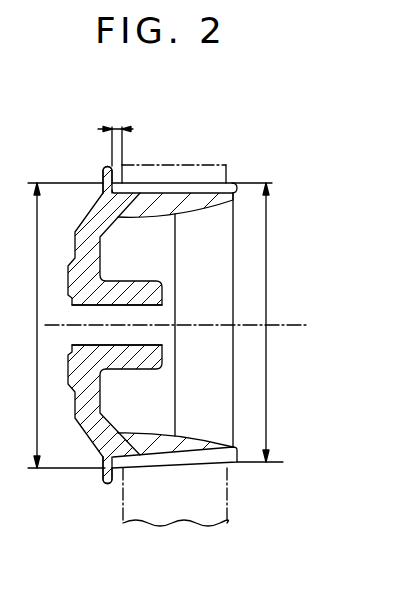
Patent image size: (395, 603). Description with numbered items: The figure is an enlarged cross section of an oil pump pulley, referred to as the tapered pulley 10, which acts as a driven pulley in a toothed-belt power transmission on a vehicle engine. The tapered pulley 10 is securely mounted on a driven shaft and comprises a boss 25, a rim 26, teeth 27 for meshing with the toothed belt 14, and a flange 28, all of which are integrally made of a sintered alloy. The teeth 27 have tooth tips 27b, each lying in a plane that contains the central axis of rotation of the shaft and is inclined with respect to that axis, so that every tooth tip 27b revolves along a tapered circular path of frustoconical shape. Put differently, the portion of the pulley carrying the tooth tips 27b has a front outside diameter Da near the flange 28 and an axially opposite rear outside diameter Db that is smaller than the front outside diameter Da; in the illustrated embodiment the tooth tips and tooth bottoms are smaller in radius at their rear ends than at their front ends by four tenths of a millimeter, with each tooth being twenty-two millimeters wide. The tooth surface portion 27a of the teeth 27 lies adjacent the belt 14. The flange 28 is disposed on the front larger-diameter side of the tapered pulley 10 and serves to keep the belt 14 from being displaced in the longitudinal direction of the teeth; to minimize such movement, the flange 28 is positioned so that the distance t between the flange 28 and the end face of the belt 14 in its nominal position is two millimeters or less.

The tapered pulley 10 is at (229, 146).
The toothed belt 14 is at (160, 166).
The boss 25 is at (147, 358).
The rim 26 is at (108, 222).
The teeth 27 is at (237, 189).
The flange upper portion 27a is at (187, 190).
The tooth tips 27b is at (213, 181).
The flange 28 is at (103, 181).
The front outside diameter Da is at (36, 328).
The rear outside diameter Db is at (267, 285).
The distance t is at (116, 125).